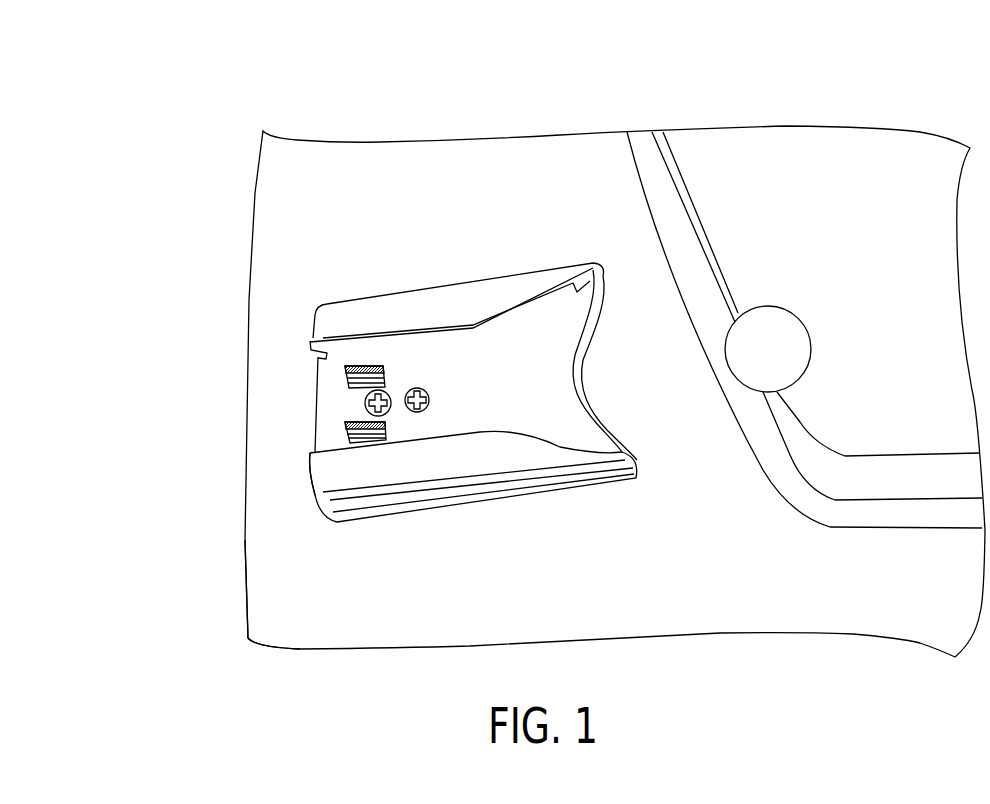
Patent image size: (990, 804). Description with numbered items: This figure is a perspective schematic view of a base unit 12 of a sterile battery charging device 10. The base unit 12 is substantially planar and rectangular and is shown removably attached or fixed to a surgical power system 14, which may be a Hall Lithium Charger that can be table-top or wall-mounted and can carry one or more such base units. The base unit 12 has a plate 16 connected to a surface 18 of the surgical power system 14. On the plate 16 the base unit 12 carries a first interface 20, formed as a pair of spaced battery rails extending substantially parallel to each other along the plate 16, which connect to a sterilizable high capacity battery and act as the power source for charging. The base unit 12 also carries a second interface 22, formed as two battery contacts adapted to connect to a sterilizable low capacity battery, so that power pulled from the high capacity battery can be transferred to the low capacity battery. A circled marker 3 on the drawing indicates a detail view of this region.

The sterile battery charging device 10 is at (348, 142).
The base unit 12 is at (460, 287).
The surgical power system 14 is at (247, 623).
The plate 16 is at (592, 435).
The surface 18 is at (439, 602).
The first interface 20 is at (313, 462).
The second interface 22 is at (385, 435).
The detail view callout (FIG. 3) 3 is at (768, 347).